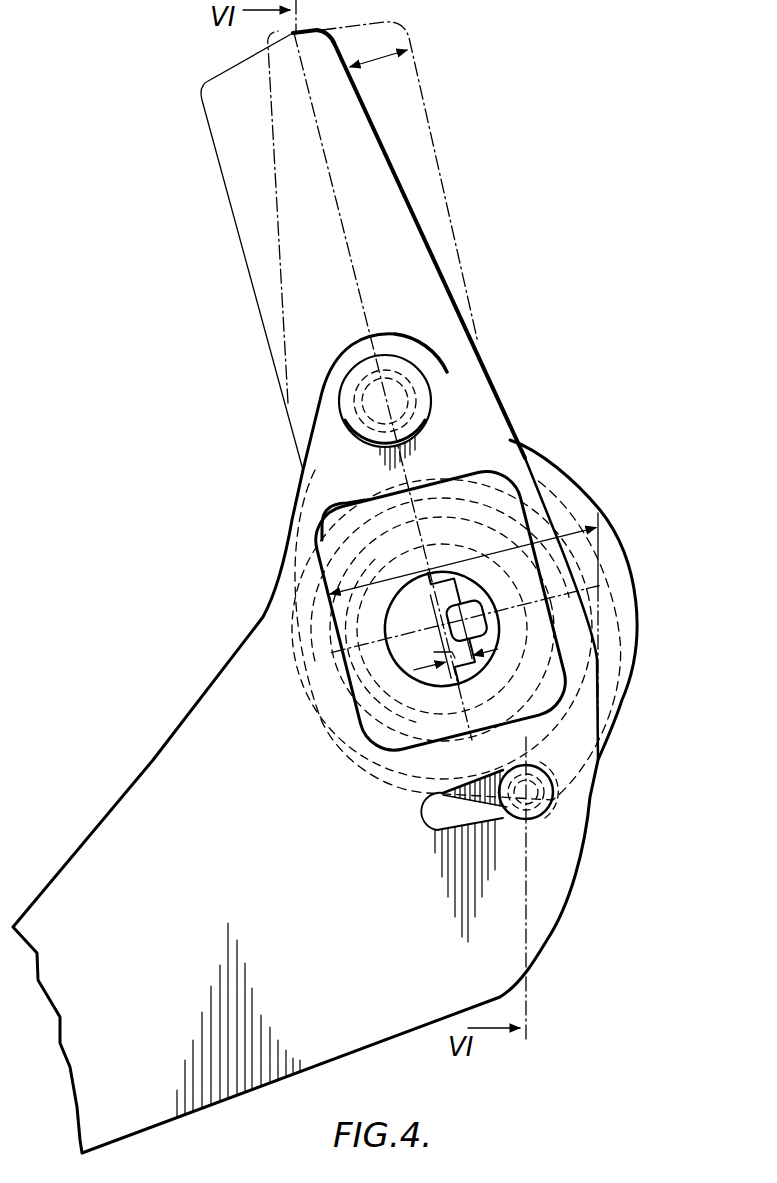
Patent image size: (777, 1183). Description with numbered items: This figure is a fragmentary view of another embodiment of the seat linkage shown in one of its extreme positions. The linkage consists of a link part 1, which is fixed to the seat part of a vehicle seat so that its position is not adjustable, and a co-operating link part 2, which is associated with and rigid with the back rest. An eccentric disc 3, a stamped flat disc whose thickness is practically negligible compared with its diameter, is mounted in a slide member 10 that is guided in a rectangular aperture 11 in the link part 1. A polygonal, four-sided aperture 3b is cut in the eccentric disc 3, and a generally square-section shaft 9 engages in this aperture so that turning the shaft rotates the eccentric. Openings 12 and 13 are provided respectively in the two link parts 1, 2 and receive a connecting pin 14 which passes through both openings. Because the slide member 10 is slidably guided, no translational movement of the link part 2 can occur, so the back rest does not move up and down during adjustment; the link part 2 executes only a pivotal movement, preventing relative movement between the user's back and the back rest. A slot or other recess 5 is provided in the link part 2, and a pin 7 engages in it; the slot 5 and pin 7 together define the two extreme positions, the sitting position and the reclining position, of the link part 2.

The link part 1 is at (530, 942).
The link part 2 is at (417, 252).
The eccentric disc 3 is at (477, 590).
The aperture 3b is at (485, 622).
The slot or recess 5 is at (432, 808).
The pin 7 is at (556, 799).
The square-section shaft 9 is at (447, 612).
The slide member 10 is at (318, 526).
The rectangular aperture 11 is at (362, 506).
The opening 12 is at (418, 394).
The opening 13 is at (413, 412).
The connecting pin 14 is at (415, 370).